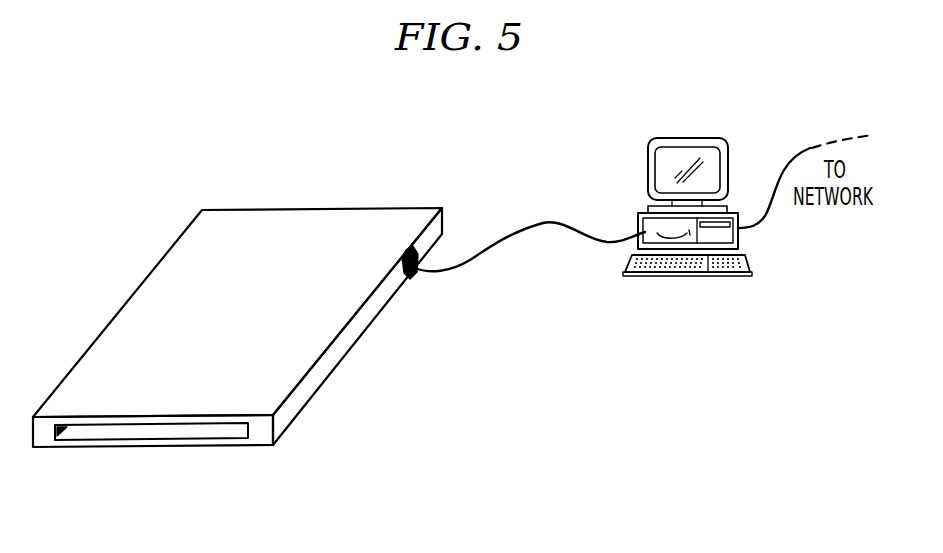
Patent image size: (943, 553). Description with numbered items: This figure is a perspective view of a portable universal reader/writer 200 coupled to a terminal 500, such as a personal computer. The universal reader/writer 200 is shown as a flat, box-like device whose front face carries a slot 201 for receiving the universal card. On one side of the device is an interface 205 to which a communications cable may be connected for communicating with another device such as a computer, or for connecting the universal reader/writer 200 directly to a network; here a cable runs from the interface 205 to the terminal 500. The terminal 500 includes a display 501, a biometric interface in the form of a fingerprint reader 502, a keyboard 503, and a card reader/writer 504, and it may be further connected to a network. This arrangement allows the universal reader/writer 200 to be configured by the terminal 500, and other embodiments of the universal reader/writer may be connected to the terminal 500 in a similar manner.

The universal reader/writer 200 is at (324, 178).
The slot 201 is at (148, 432).
The interface 205 is at (412, 274).
The terminal 500 is at (682, 167).
The display 501 is at (654, 166).
The fingerprint reader 502 is at (633, 246).
The keyboard 503 is at (649, 222).
The card reader/writer 504 is at (718, 228).